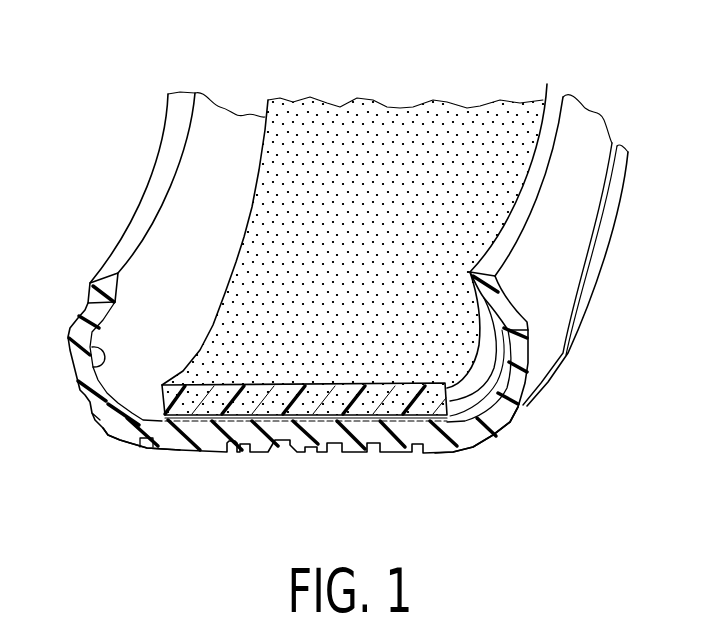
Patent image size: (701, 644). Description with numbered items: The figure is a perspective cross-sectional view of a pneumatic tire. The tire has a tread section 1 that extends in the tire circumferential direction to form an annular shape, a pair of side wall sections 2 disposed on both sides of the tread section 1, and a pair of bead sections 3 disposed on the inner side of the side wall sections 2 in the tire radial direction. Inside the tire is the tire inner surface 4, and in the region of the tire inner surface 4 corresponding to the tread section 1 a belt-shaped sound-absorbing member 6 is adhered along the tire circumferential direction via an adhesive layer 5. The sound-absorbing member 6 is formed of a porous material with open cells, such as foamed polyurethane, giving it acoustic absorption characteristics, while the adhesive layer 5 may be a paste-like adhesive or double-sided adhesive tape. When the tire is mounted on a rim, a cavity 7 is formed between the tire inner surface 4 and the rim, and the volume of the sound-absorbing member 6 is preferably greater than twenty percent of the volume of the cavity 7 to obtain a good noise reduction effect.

The tread section 1 is at (433, 452).
The side wall section 2 is at (80, 383).
The bead section 3 is at (88, 297).
The tire inner surface 4 is at (73, 350).
The adhesive layer 5 is at (307, 421).
The sound-absorbing member 6 is at (391, 138).
The cavity 7 is at (183, 257).